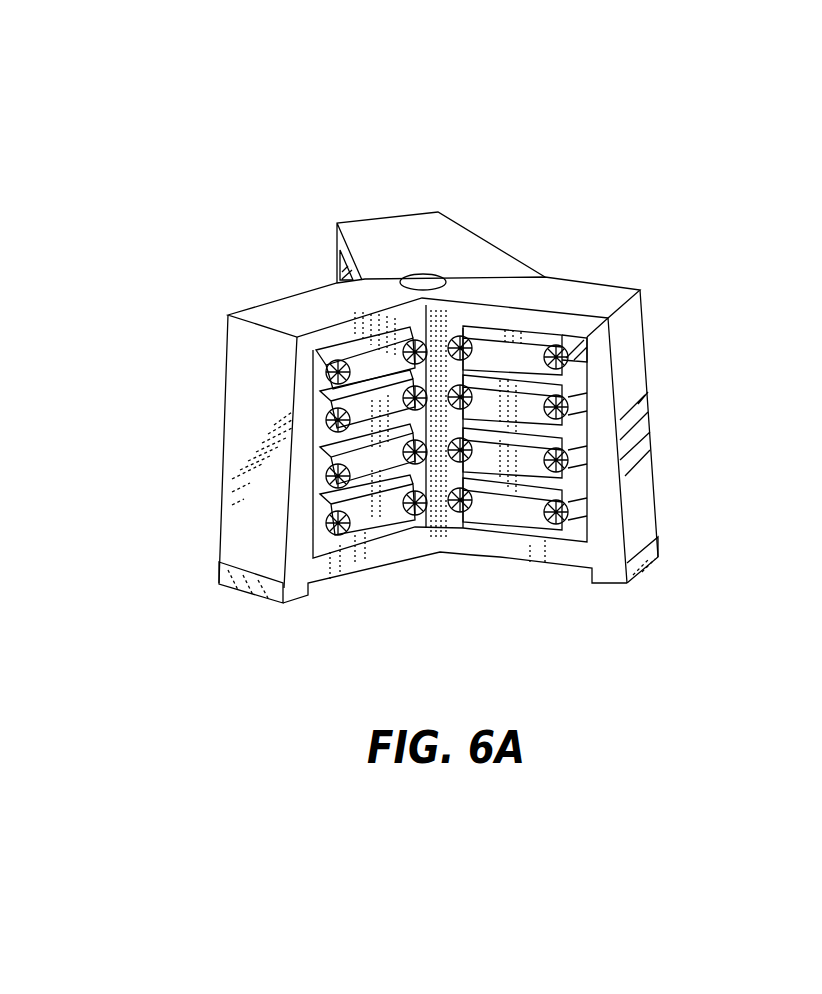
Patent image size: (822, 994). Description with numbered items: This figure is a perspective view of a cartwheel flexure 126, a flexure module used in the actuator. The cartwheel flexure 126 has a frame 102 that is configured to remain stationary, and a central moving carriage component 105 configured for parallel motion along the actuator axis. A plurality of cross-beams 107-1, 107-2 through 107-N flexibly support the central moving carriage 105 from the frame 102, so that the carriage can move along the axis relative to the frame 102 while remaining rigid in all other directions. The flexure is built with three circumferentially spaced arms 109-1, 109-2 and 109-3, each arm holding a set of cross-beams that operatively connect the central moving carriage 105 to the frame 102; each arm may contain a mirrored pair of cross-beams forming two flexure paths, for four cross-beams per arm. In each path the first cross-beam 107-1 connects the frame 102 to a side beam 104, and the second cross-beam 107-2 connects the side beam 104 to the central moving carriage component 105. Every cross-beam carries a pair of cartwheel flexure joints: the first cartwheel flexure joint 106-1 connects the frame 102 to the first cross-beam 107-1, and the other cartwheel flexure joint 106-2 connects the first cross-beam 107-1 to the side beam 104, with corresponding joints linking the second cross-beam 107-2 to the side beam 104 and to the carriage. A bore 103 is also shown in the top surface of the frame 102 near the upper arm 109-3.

The cartwheel flexure 126 is at (312, 122).
The frame 102 is at (292, 473).
The bore 103 is at (423, 276).
The side beam 104 is at (575, 473).
The central moving carriage component 105 is at (438, 472).
The cartwheel flexure joint 106-1 is at (453, 337).
The cartwheel flexure joint 106-2 is at (553, 350).
The first cross-beam 107-1 is at (500, 358).
The second cross-beam 107-2 is at (520, 405).
The cross-beam 107-N is at (515, 507).
The arm 109-1 is at (652, 568).
The arm 109-2 is at (275, 604).
The arm 109-3 is at (333, 268).